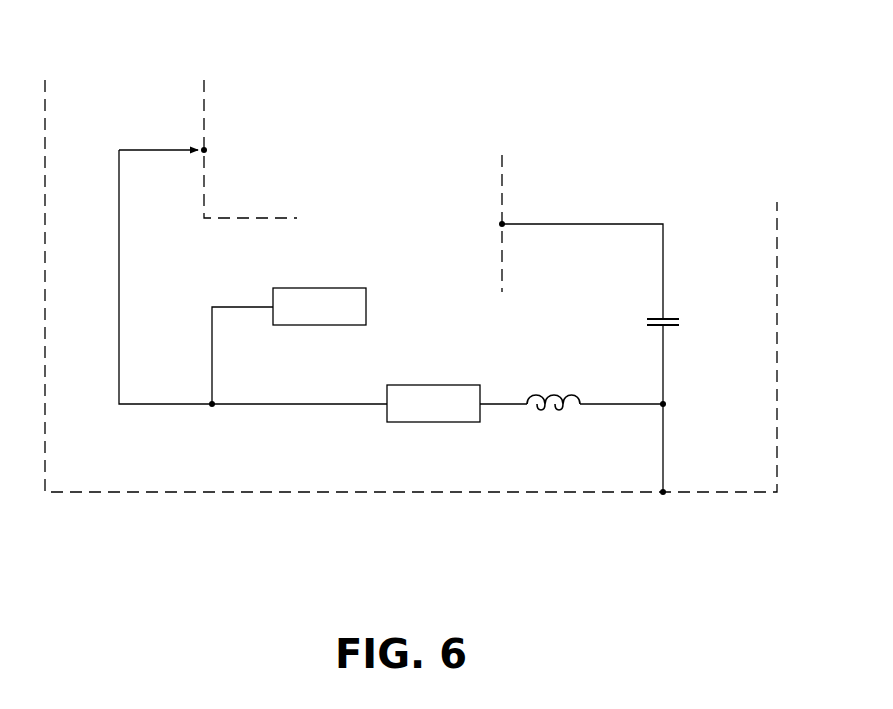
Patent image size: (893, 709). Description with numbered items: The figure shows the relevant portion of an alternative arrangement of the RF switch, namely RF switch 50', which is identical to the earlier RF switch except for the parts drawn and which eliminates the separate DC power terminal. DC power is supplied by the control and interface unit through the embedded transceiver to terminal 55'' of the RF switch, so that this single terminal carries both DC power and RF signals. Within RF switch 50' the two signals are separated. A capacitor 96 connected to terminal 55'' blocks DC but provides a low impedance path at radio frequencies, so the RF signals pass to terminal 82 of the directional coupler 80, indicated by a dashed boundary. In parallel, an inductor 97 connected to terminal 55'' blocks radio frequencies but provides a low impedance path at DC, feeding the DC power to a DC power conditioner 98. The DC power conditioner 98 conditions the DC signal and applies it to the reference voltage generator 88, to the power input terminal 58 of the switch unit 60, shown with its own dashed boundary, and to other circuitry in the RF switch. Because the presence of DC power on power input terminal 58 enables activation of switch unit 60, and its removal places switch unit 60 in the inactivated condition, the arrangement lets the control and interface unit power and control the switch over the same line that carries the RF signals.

The RF switch 50' is at (411, 326).
The terminal 55'' is at (611, 479).
The power input terminal 58 is at (208, 148).
The switch unit 60 is at (200, 108).
The directional coupler 80 is at (510, 260).
The terminal of directional coupler 82 is at (505, 222).
The reference voltage generator 88 is at (318, 288).
The capacitor 96 is at (668, 318).
The inductor 97 is at (553, 412).
The DC power conditioner 98 is at (418, 384).